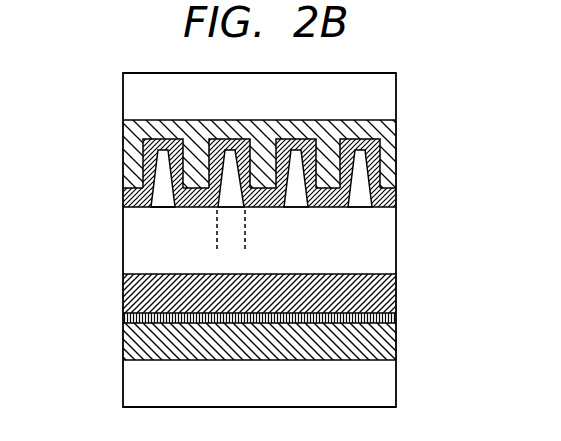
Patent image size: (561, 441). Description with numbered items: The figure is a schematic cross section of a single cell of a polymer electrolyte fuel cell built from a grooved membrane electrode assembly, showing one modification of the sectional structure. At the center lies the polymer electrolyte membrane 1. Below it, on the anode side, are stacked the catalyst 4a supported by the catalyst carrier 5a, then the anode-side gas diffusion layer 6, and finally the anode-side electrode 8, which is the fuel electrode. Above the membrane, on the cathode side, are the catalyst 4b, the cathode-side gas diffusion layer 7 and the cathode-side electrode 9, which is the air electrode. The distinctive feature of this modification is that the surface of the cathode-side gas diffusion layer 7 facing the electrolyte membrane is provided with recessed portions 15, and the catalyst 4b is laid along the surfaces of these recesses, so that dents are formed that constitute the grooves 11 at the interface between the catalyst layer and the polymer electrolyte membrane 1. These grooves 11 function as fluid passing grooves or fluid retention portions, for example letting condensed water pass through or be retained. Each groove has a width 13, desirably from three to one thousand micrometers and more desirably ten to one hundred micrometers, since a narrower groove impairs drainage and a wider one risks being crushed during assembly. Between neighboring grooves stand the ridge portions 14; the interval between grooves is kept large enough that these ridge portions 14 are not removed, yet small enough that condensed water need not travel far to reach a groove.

The cathode-side electrode 9 is at (390, 92).
The cathode-side gas diffusion layer 7 is at (393, 130).
The grooves 11 is at (127, 200).
The catalyst 4b is at (390, 196).
The recessed portions 15 is at (150, 156).
The polymer electrolyte membrane 1 is at (392, 238).
The ridge portion 14 is at (194, 207).
The width 13 is at (188, 242).
The catalyst 4a is at (393, 291).
The catalyst carrier 5a is at (393, 315).
The anode-side gas diffusion layer 6 is at (393, 338).
The anode-side electrode 8 is at (390, 383).